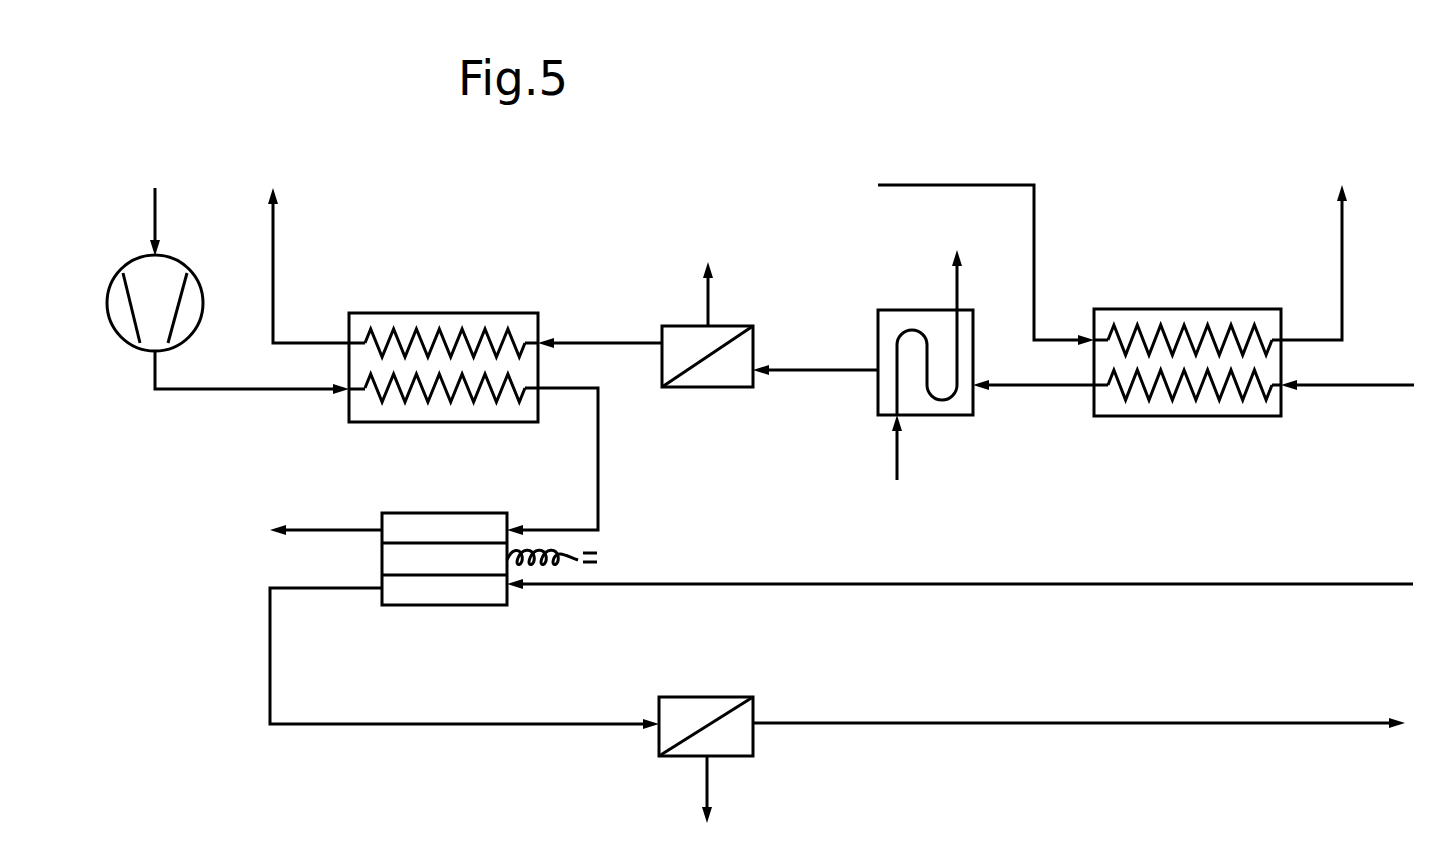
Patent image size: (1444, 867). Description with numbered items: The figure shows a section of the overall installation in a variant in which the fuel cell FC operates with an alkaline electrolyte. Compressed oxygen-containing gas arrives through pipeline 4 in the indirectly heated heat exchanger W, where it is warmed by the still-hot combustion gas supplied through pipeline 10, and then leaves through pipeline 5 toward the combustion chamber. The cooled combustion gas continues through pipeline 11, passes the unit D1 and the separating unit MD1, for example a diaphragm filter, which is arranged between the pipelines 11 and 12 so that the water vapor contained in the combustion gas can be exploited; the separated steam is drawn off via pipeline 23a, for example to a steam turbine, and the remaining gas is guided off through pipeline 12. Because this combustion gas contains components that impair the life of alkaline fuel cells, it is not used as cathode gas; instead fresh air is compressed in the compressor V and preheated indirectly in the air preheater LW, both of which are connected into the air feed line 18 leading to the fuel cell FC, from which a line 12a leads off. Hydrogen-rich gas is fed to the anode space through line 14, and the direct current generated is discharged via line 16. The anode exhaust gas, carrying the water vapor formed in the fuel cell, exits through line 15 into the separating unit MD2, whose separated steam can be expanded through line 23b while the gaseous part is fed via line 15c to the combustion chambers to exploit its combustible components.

The pipeline 4 is at (993, 243).
The pipeline 5 is at (1319, 262).
The pipeline 10 is at (1343, 403).
The pipeline 11 is at (930, 378).
The pipeline 12 is at (465, 268).
The outlet line 12a is at (326, 511).
The pipeline 14 is at (960, 566).
The pipeline 15 is at (464, 658).
The line 15c is at (1079, 701).
The line 16 is at (583, 572).
The air feed line 18 is at (391, 357).
The pipeline 23a is at (734, 294).
The line 23b is at (734, 789).
The compressor V is at (145, 304).
The air preheater LW is at (443, 346).
The separating unit MD1 is at (708, 379).
The evaporator/column D1 is at (927, 365).
The heat exchanger W is at (1187, 385).
The fuel cell FC is at (420, 562).
The separating unit MD2 is at (707, 702).